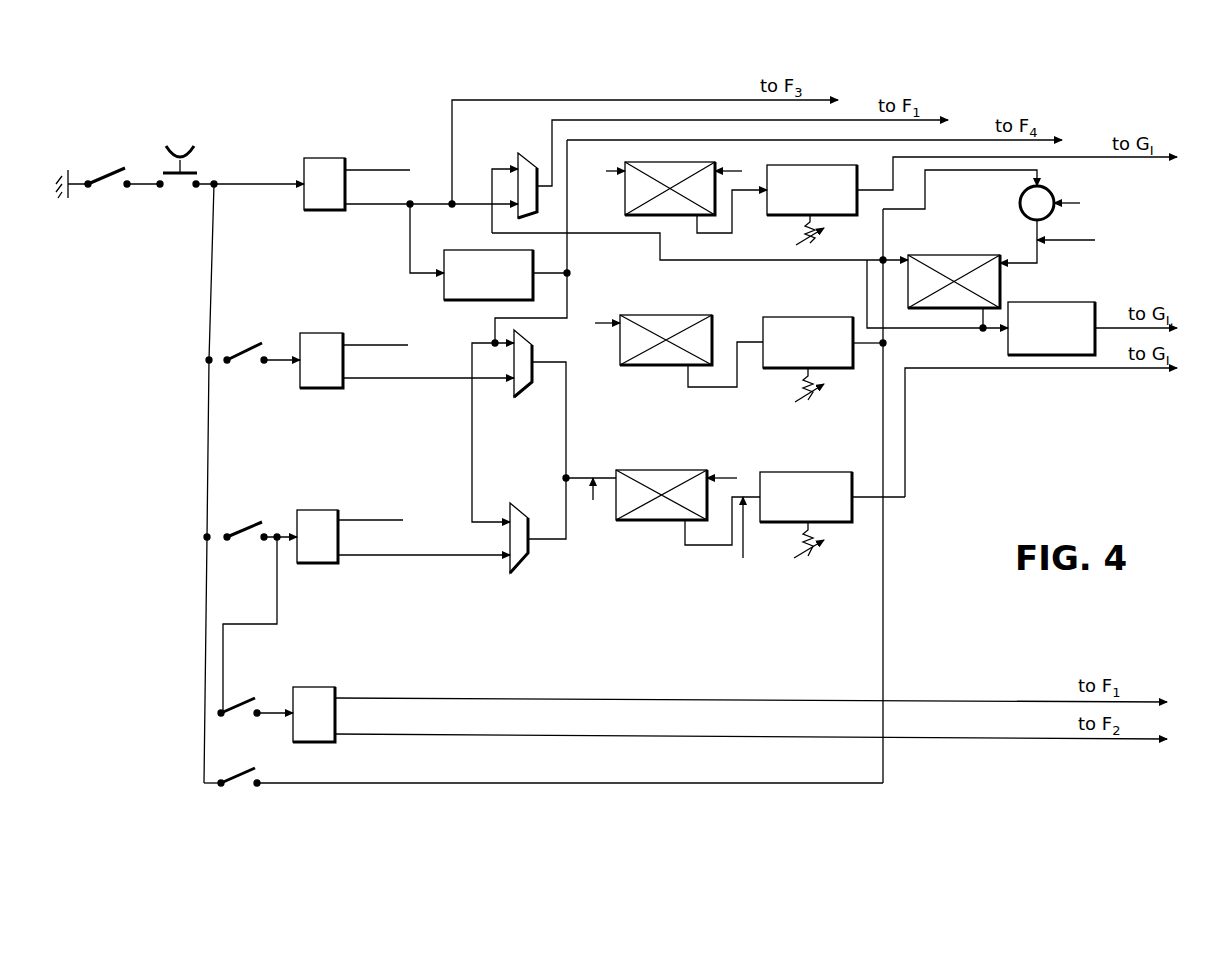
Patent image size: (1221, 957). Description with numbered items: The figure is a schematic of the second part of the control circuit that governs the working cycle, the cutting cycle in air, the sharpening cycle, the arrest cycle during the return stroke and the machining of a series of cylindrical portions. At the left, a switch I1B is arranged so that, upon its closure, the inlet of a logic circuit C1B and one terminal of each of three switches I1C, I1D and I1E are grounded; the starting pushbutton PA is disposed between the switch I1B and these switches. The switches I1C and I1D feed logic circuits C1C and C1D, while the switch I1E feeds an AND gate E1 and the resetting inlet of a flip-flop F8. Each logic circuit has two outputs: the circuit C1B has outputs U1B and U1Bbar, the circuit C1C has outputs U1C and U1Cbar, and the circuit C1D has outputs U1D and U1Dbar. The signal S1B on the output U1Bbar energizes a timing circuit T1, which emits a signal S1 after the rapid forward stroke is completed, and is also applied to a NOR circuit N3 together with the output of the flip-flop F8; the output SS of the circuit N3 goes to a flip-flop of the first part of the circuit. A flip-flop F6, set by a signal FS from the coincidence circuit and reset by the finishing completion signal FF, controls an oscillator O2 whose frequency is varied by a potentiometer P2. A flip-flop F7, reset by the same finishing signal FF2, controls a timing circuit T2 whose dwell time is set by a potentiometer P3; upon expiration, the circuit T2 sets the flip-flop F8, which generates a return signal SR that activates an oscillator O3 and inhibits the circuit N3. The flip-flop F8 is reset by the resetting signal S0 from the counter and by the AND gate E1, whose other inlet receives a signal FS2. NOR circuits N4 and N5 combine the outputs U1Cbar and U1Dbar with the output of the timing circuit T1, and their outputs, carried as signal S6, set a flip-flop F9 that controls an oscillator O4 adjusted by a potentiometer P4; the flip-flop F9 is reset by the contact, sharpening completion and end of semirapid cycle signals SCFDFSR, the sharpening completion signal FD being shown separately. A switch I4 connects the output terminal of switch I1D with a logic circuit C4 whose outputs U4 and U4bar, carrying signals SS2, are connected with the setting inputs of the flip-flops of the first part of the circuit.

The switch I1B is at (120, 174).
The starting pushbutton PA is at (180, 154).
The logic circuit C1B is at (316, 160).
The output U1B of logic circuit C1B U1B is at (377, 156).
The output Ū1B of logic circuit C1B U1Bbar is at (368, 180).
The signal S1B is at (452, 172).
The timing circuit T1 is at (468, 262).
The signal S1 is at (546, 270).
The NOR circuit N3 is at (526, 160).
The signal SS is at (552, 118).
The flip-flop F6 is at (627, 196).
The signal FS is at (608, 178).
The signal of finishing completion FF is at (734, 174).
The oscillator O2 is at (848, 180).
The potentiometer P2 is at (800, 238).
The AND gate E1 is at (1020, 200).
The signal FS FS2 is at (1070, 203).
The resetting signal S0 is at (1076, 244).
The flip-flop F8 is at (958, 262).
The return signal SR is at (978, 320).
The oscillator O3 is at (1058, 306).
The flip-flop F7 is at (624, 350).
The signal of finishing completion FF2 is at (608, 324).
The timing circuit T2 is at (826, 326).
The potentiometer P3 is at (800, 396).
The NOR circuit N4 is at (528, 390).
The NOR circuit N5 is at (526, 566).
The switch I1C is at (242, 352).
The logic circuit C1C is at (314, 336).
The output U1C of logic circuit C1C U1C is at (375, 332).
The output Ū1C of logic circuit C1C U1Cbar is at (365, 355).
The switch I1D is at (238, 530).
The logic circuit C1D is at (310, 513).
The output U1D of logic circuit C1D U1D is at (370, 507).
The output Ū1D of logic circuit C1D U1Dbar is at (361, 533).
The flip-flop F9 is at (632, 518).
The signal S6 is at (596, 508).
The contact, sharpening completion and end of semirapid cycle signals SCFDFSR is at (724, 474).
The signal of sharpening completion FD is at (742, 550).
The oscillator O4 is at (820, 480).
The potentiometer P4 is at (800, 552).
The switch I4 is at (244, 706).
The logic circuit C4 is at (308, 690).
The output U4 of logic circuit C4 U4 is at (751, 687).
The output Ū4 of logic circuit C4 U4bar is at (358, 712).
The signal SS SS2 is at (474, 698).
The switch I1E is at (236, 776).